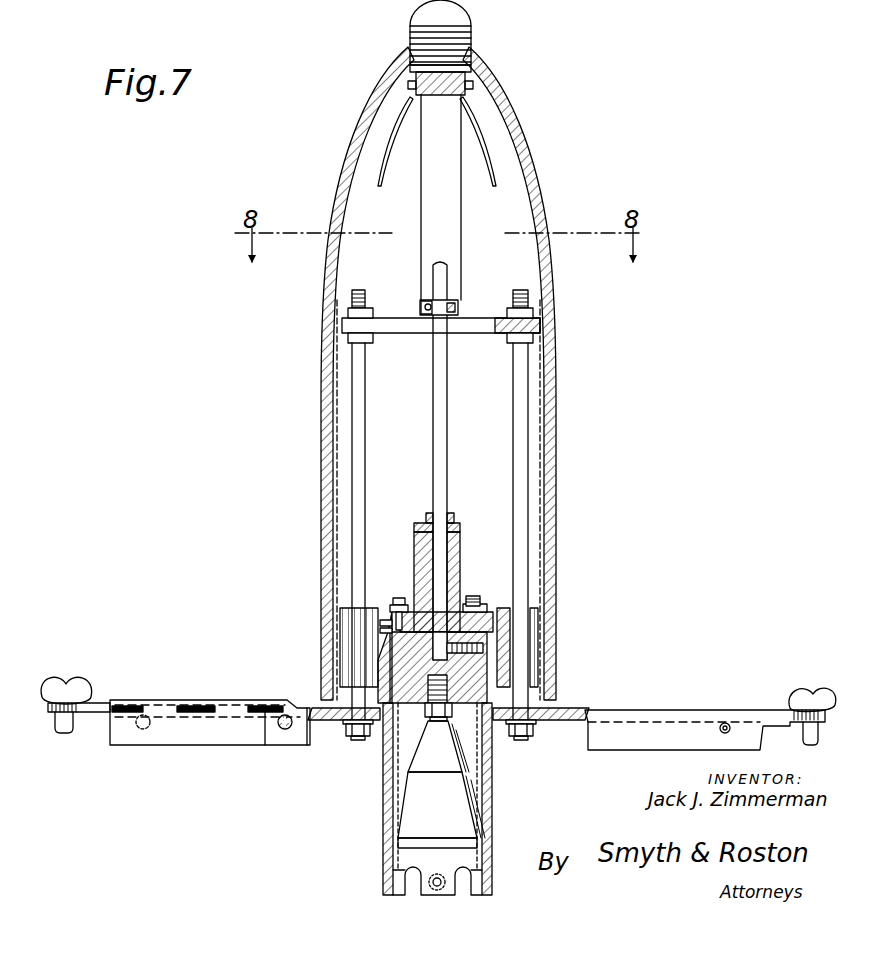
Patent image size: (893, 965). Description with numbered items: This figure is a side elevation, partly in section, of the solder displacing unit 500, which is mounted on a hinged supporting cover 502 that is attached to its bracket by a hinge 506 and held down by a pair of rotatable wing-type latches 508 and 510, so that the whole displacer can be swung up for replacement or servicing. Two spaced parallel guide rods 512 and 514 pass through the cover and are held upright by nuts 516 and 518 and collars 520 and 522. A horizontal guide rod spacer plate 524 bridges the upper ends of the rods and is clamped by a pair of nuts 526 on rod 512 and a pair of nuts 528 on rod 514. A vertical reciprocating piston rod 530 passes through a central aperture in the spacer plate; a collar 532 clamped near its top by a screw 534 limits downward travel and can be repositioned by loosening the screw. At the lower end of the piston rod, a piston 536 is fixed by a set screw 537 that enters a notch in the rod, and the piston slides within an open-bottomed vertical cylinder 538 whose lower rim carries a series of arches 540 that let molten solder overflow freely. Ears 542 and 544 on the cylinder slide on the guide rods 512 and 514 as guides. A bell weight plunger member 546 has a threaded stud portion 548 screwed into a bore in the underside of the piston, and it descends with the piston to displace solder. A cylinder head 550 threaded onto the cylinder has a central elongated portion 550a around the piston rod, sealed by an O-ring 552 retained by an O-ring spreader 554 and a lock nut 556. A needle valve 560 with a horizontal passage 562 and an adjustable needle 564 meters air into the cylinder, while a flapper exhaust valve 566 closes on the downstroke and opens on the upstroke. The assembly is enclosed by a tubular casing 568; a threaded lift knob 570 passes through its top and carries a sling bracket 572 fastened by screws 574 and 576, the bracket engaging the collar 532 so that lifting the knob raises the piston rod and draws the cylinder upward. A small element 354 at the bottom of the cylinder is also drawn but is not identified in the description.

The solder displacing unit 500 is at (560, 364).
The hinged supporting cover 502 is at (714, 710).
The hinge 506 is at (256, 738).
The wing-type latch 508 is at (802, 695).
The wing-type latch 510 is at (80, 690).
The guide rod 512 is at (357, 420).
The guide rod 514 is at (520, 452).
The nut 516 is at (356, 738).
The nut 518 is at (532, 730).
The collar 520 is at (320, 708).
The collar 522 is at (500, 712).
The guide rod spacer plate 524 is at (388, 330).
The nuts 526 is at (350, 336).
The nuts 528 is at (538, 338).
The piston rod 530 is at (441, 450).
The collar 532 is at (456, 305).
The screw 534 is at (420, 308).
The piston 536 is at (488, 670).
The set screw 537 is at (483, 650).
The cylinder 538 is at (493, 752).
The arches 540 is at (398, 888).
The ear 542 is at (345, 612).
The ear 544 is at (506, 612).
The bell weight plunger member 546 is at (425, 800).
The threaded stud portion 548 is at (422, 724).
The cylinder head 550 is at (414, 600).
The central elongated portion 550a is at (458, 578).
The O-ring 552 is at (453, 551).
The O-ring spreader 554 is at (450, 515).
The lock nut 556 is at (461, 527).
The needle valve 560 is at (380, 621).
The horizontal passage 562 is at (384, 631).
The adjustable needle 564 is at (400, 591).
The flapper exhaust valve 566 is at (490, 588).
The tubular casing 568 is at (553, 237).
The lift knob 570 is at (470, 12).
The sling bracket 572 is at (422, 226).
The screw 574 is at (466, 82).
The screw 576 is at (412, 80).
The hole 354 is at (443, 880).